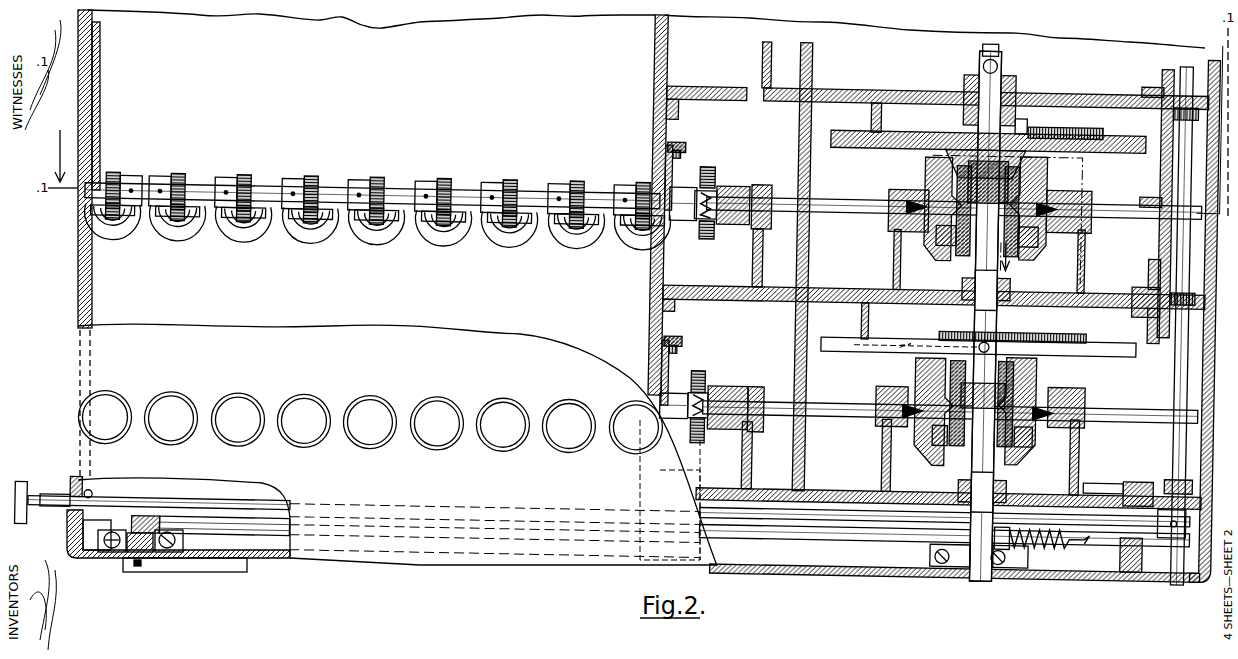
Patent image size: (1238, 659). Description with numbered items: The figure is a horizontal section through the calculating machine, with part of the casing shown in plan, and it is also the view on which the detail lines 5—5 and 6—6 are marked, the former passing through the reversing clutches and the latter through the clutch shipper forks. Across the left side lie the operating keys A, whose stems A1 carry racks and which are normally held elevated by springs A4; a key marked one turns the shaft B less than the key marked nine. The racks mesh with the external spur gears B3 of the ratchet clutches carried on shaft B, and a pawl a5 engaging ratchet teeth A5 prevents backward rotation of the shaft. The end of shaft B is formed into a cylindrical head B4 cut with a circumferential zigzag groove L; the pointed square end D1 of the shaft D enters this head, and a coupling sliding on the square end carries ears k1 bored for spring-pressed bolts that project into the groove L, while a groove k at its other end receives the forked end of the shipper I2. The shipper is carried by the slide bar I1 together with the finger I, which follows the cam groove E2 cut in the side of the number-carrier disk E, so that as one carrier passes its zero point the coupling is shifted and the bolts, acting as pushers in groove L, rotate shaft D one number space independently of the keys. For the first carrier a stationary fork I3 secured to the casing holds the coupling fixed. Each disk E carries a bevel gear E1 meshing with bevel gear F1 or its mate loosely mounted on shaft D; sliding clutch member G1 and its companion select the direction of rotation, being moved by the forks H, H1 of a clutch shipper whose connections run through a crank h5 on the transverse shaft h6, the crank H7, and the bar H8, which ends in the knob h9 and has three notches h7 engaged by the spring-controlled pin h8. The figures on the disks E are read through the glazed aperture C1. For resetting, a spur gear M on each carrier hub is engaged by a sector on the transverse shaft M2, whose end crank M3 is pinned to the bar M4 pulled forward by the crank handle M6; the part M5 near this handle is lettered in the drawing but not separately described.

The operating keys A is at (238, 392).
The key stems A1 is at (300, 238).
The springs A4 is at (195, 238).
The ratchet teeth A5 is at (640, 242).
The pawl a5 is at (652, 186).
The shaft B is at (456, 182).
The external spur gears B3 is at (303, 174).
The cylindrical head B4 is at (692, 220).
The zigzag groove L is at (710, 172).
The shaft D is at (840, 212).
The square end of shaft D D1 is at (732, 186).
The groove k is at (766, 186).
The ears k1 is at (702, 168).
The finger I is at (862, 110).
The slide bar I1 is at (782, 100).
The coupling-shipper I2 is at (736, 262).
The stationary fork I3 is at (710, 470).
The spur gear M is at (1020, 127).
The transverse shaft M2 is at (988, 46).
The crank M3 is at (1005, 562).
The bar M4 is at (272, 532).
The screw block M5 is at (120, 560).
The crank handle M6 is at (185, 581).
The number carriers E is at (1075, 366).
The bevel gear E1 is at (923, 160).
The cam groove E2 is at (880, 134).
The bevel gear F1 is at (930, 176).
The sliding clutch member G1 is at (905, 222).
The glazed opening C1 is at (917, 368).
The fork H is at (925, 246).
The fork H1 is at (1060, 244).
The crank H7 is at (1184, 552).
The bar H8 is at (800, 508).
The crank h5 is at (1158, 266).
The transverse shaft h6 is at (1158, 322).
The notches h7 is at (60, 508).
The spring-controlled pin h8 is at (70, 488).
The knob h9 is at (24, 485).
The section line 5— 5 is at (994, 216).
The section line 6— 6 is at (1045, 177).